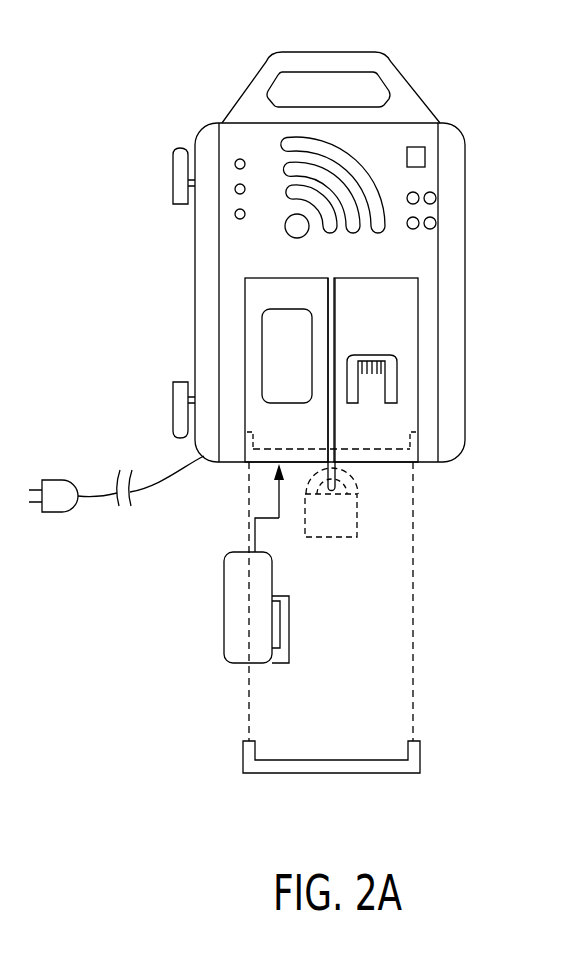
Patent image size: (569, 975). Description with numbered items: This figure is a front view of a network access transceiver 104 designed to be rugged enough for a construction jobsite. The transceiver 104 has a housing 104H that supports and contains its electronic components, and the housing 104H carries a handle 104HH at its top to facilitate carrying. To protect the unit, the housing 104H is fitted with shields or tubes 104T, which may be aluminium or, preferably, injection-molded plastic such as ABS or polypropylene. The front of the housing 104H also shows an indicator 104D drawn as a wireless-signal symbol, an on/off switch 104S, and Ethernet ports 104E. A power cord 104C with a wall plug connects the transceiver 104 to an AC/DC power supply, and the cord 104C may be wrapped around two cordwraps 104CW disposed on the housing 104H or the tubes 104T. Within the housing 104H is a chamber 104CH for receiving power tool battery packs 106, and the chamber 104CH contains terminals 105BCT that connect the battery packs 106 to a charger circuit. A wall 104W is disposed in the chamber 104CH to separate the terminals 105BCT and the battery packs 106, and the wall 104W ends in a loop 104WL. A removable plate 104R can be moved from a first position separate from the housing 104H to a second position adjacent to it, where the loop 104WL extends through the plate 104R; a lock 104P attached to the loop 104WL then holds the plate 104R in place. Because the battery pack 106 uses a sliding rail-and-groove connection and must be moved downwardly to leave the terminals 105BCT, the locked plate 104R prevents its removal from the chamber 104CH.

The transceiver 104 is at (214, 277).
The handle 104HH is at (384, 65).
The wireless display indicator 104D is at (288, 166).
The on/off switch 104S is at (425, 158).
The Ethernet port(s) 104E is at (433, 198).
The shield or tubes 104T is at (202, 313).
The cordwraps 104CW is at (173, 176).
The housing 104H is at (433, 297).
The chamber 104CH is at (412, 347).
The power tool battery pack 106 is at (272, 323).
The terminals 105BCT is at (393, 383).
The wall 104W is at (333, 418).
The loop 104WL is at (337, 468).
The lock 104P is at (350, 528).
The removable plate 104R is at (383, 765).
The power cord 104C is at (90, 498).